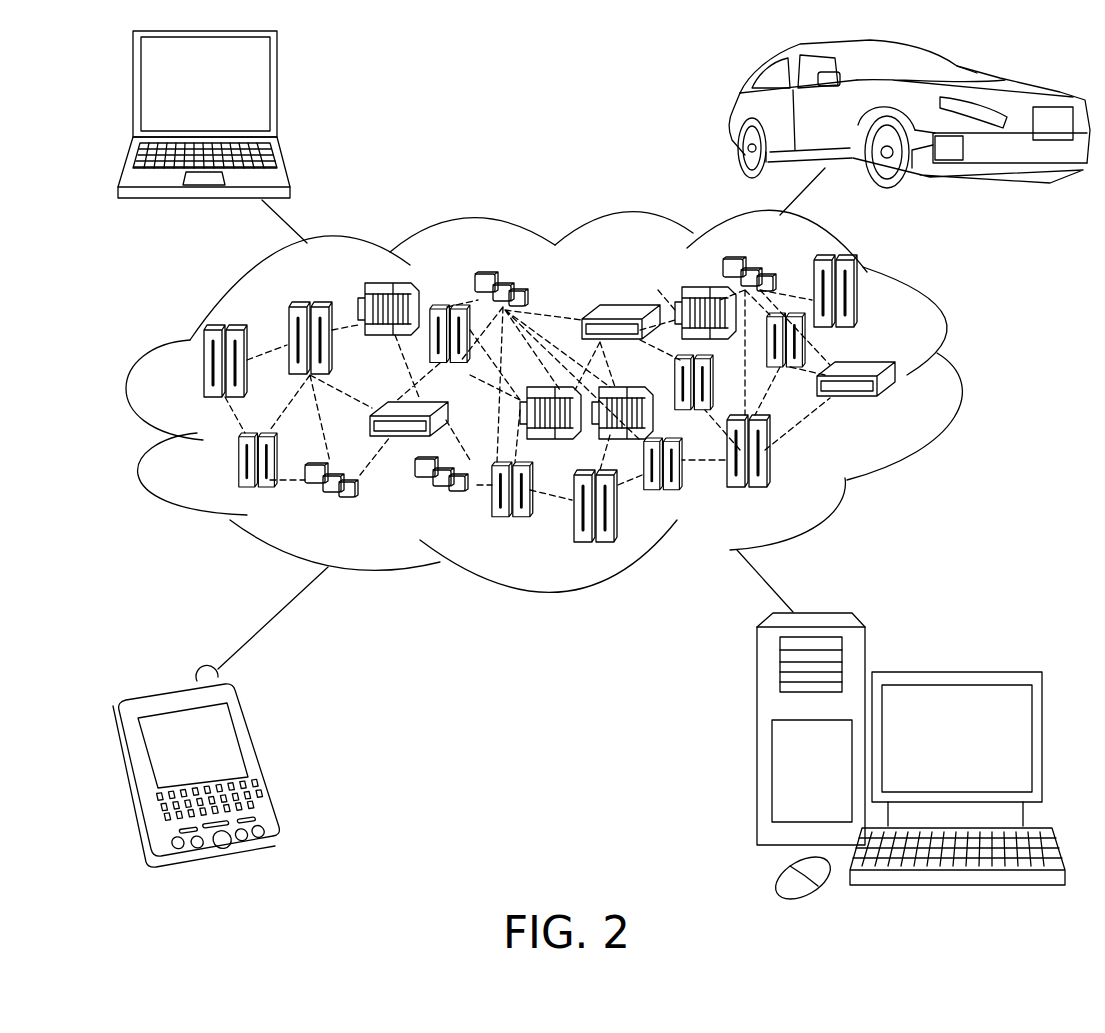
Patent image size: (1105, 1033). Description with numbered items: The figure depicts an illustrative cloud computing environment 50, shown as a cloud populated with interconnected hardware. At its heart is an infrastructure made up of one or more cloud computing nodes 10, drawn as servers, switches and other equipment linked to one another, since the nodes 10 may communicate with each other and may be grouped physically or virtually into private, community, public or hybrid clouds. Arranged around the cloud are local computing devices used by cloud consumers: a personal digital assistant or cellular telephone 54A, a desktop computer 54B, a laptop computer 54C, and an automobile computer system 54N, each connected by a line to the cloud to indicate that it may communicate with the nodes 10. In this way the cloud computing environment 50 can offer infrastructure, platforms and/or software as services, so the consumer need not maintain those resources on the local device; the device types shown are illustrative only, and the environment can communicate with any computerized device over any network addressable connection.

The cloud computing environment 50 is at (960, 380).
The cloud computing nodes 10 is at (898, 408).
The personal digital assistant or cellular telephone 54A is at (257, 758).
The desktop computer 54B is at (955, 672).
The laptop computer 54C is at (277, 92).
The automobile computer system 54N is at (735, 113).